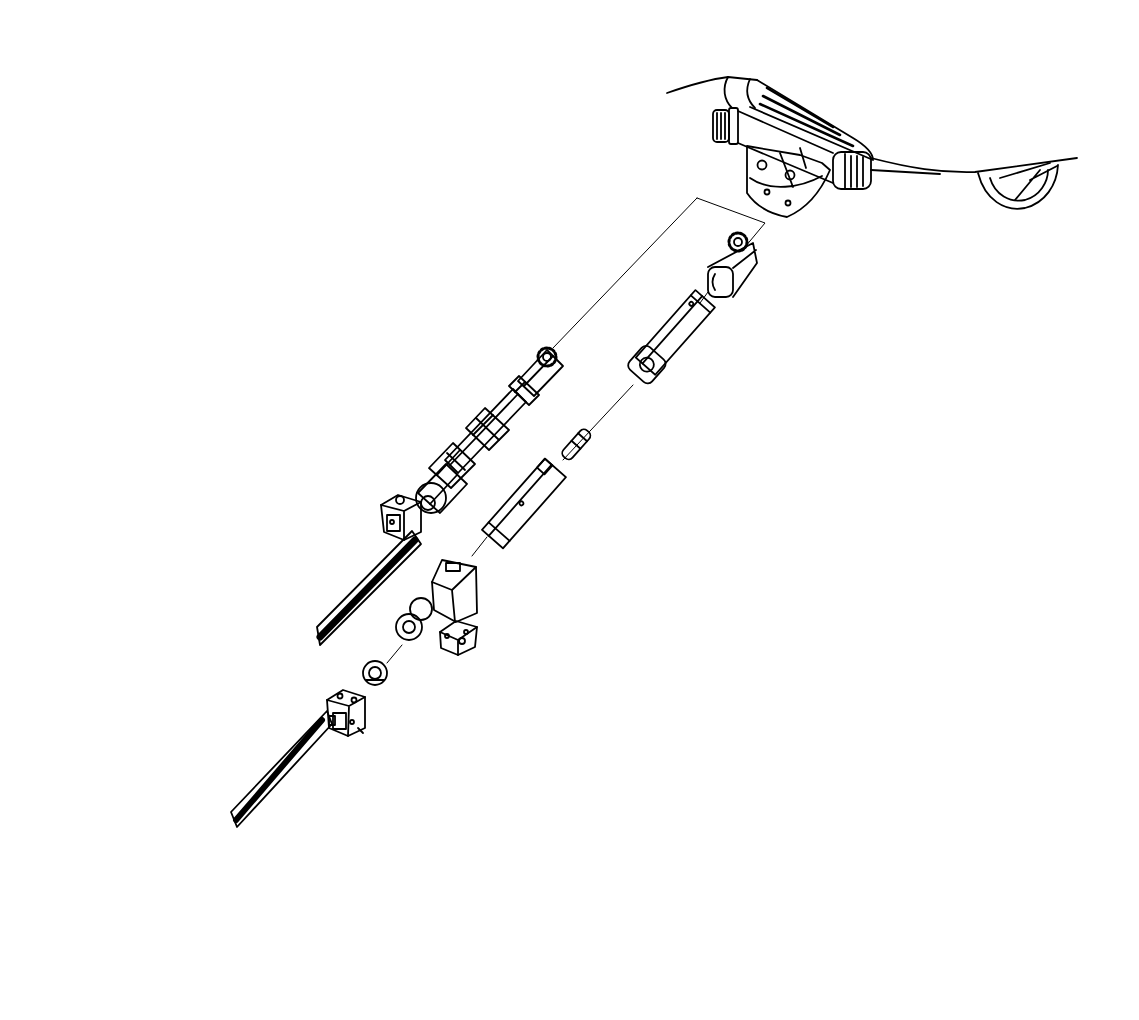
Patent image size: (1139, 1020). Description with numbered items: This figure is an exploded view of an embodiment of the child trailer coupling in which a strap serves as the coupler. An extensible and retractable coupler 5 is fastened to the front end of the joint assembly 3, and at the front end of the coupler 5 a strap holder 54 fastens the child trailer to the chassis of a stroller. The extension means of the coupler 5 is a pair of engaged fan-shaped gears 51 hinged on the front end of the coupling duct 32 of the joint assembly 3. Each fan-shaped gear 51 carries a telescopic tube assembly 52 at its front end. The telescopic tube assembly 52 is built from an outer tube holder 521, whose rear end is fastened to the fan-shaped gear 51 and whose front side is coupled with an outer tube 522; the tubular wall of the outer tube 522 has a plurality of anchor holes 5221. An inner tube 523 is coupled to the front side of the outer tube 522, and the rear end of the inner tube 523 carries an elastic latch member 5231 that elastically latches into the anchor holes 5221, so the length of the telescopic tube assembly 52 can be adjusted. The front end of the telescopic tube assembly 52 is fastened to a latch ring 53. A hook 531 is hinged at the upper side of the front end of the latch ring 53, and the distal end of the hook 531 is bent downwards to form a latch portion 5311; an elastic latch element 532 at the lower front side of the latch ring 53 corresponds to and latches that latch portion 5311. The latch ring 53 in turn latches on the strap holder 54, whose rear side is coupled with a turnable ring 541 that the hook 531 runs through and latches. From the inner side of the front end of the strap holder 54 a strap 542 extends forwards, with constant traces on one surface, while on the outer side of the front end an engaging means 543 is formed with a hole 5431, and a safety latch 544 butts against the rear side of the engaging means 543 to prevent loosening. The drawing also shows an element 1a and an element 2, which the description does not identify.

The vehicle body 1a is at (834, 359).
The housing 2 is at (735, 84).
The joint assembly 3 is at (755, 140).
The coupling duct 32 is at (860, 187).
The coupler 5 is at (304, 235).
The fan-shaped gear 51 is at (757, 237).
The telescopic tube assembly 52 is at (738, 632).
The outer tube holder 521 is at (730, 275).
The outer tube 522 is at (703, 310).
The anchor holes 5221 is at (657, 377).
The inner tube 523 is at (527, 503).
The elastic latch member 5231 is at (585, 442).
The latch ring 53 is at (473, 590).
The hook 531 is at (433, 637).
The latch portion 5311 is at (463, 643).
The elastic latch element 532 is at (470, 638).
The strap holder 54 is at (397, 517).
The turnable ring 541 is at (400, 500).
The strap 542 is at (357, 580).
The engaging means 543 is at (343, 723).
The hole 5431 is at (380, 527).
The safety latch 544 is at (360, 730).